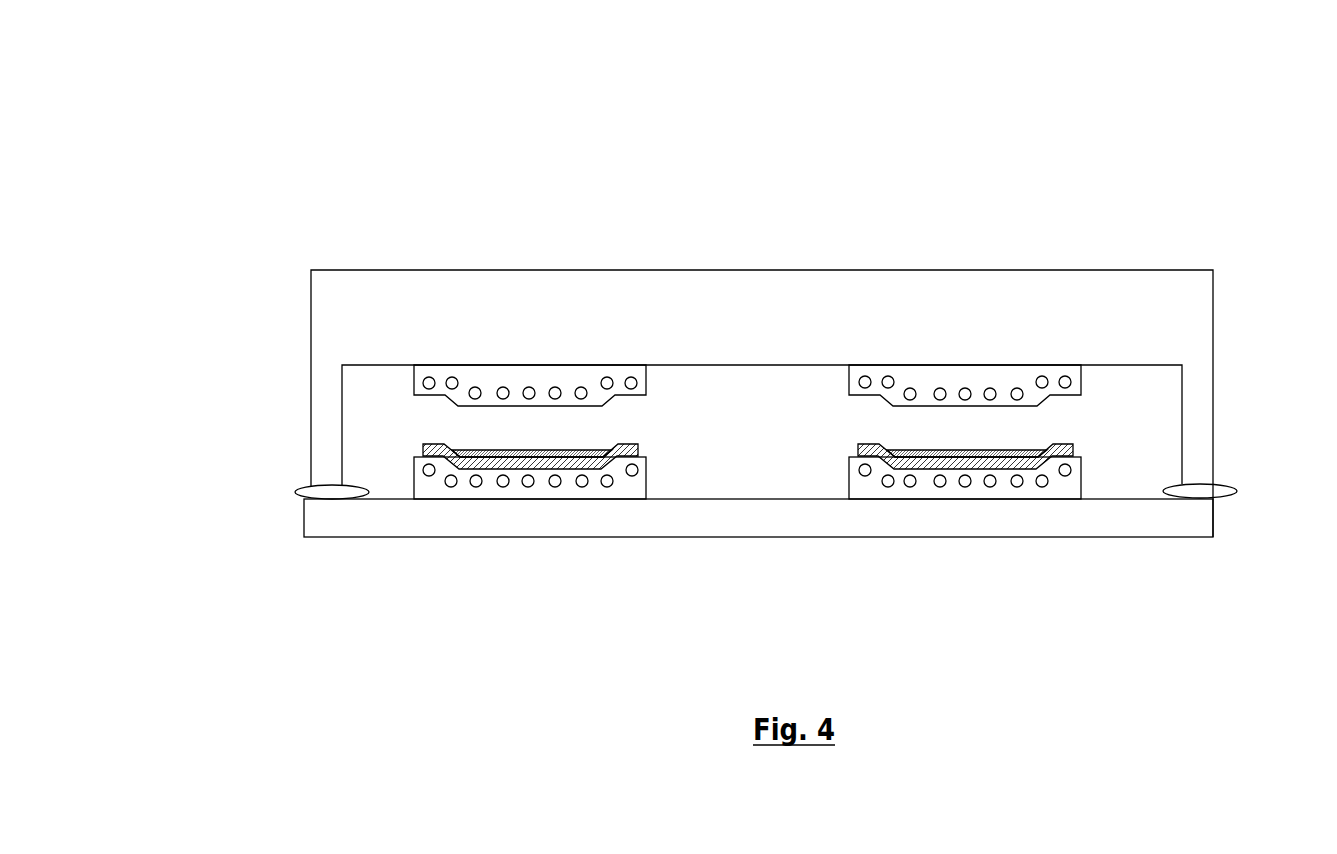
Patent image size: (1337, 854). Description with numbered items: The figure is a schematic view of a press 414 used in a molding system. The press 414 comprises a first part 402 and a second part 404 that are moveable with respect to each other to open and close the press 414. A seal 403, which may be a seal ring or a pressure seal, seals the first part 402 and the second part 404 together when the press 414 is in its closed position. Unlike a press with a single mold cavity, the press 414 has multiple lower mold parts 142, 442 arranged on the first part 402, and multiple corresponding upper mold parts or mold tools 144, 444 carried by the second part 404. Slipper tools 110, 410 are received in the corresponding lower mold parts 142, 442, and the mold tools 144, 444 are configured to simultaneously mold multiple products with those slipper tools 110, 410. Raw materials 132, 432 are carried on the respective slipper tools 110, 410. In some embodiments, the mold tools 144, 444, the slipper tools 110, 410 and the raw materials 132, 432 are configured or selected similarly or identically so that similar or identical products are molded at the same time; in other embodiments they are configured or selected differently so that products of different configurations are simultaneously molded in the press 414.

The press 414 is at (1157, 65).
The second part 404 is at (342, 295).
The first part 402 is at (410, 517).
The seal 403 is at (300, 495).
The mold tool 444 is at (445, 397).
The lower mold part 442 is at (413, 455).
The slipper tool 410 is at (642, 447).
The raw material 432 is at (527, 450).
The mold tool 144 is at (880, 397).
The lower mold part 142 is at (848, 455).
The slipper tool 110 is at (1080, 446).
The raw material 132 is at (962, 450).